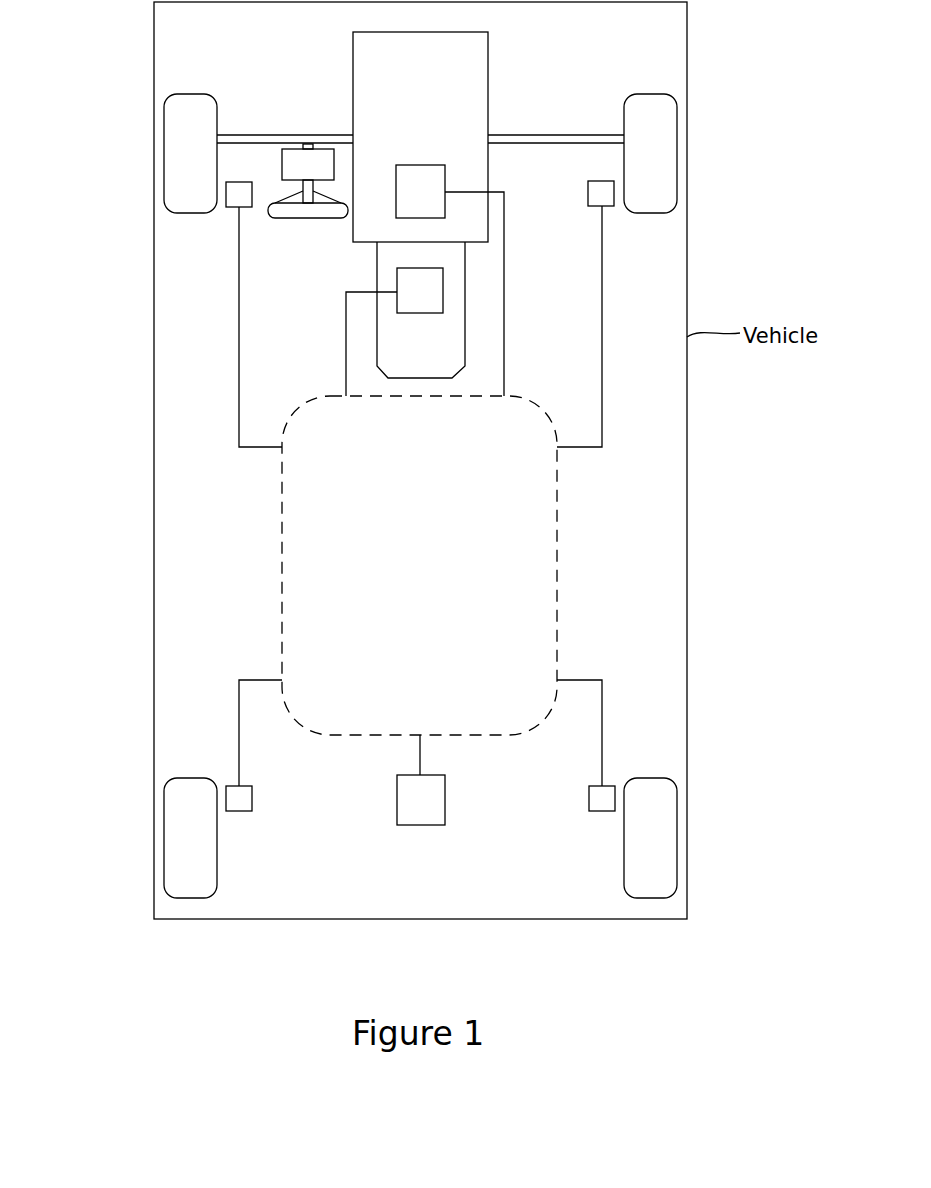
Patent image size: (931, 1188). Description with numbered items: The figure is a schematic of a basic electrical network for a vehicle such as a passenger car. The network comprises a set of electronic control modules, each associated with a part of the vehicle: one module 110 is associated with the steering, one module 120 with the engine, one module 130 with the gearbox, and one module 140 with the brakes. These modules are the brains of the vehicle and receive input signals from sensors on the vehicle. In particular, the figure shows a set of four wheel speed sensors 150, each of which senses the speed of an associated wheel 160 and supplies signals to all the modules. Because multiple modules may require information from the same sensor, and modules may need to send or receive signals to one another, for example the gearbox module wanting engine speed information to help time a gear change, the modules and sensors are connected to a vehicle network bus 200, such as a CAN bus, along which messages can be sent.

The electronic control module 110 is at (329, 174).
The electronic control module 120 is at (423, 177).
The electronic control module 130 is at (440, 302).
The electronic control module 140 is at (443, 811).
The wheel speed sensor 150 is at (233, 204).
The wheel 160 is at (752, 818).
The vehicle network bus 200 is at (557, 497).